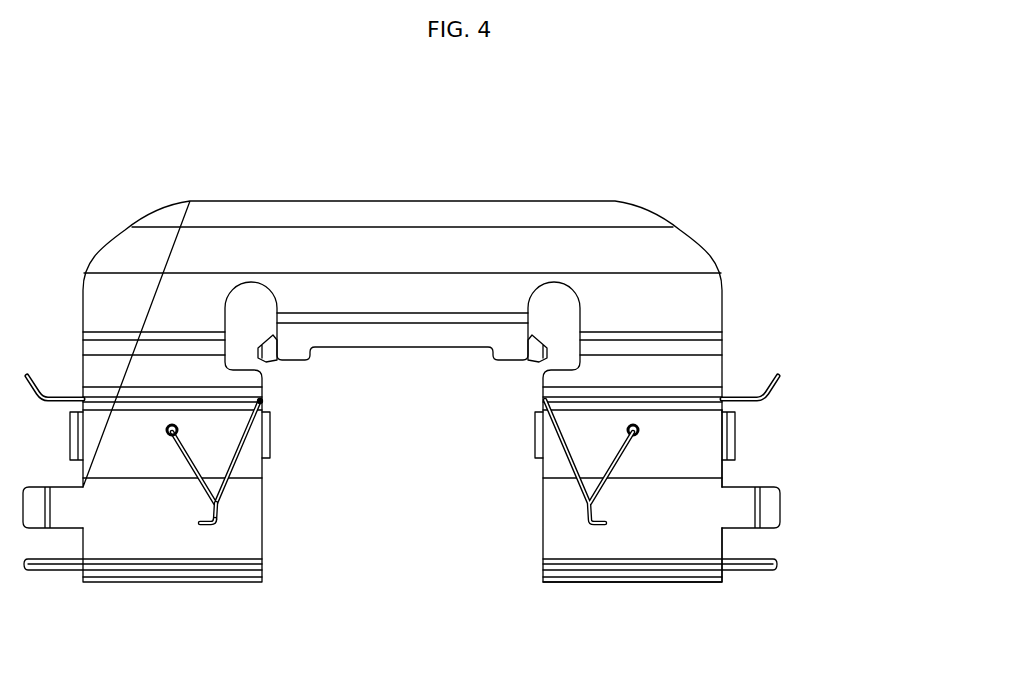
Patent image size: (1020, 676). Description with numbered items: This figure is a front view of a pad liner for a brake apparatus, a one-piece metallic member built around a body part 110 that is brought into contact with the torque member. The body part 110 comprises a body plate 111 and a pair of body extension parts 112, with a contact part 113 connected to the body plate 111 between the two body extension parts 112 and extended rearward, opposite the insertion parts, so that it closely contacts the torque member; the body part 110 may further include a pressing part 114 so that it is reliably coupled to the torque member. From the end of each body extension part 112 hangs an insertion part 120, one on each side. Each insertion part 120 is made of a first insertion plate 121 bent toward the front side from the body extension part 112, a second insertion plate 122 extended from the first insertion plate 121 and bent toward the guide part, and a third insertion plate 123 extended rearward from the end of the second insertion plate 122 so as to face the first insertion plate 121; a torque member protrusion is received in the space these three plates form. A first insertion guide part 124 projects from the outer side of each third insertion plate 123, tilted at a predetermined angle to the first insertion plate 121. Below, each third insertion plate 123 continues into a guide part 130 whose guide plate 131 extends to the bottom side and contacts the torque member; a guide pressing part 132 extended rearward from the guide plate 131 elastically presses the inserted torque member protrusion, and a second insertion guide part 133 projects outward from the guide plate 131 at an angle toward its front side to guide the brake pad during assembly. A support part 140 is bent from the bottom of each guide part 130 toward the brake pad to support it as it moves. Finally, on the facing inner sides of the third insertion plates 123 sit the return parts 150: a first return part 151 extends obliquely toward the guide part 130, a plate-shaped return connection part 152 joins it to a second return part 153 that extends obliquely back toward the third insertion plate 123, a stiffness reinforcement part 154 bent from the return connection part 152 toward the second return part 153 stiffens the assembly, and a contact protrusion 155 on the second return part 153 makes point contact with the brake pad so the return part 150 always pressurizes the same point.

The body part 110 is at (645, 190).
The body plate 111 is at (570, 250).
The body extension part 112 is at (688, 308).
The contact part 113 is at (455, 322).
The pressing part 114 is at (270, 350).
The insertion part 120 is at (787, 270).
The first insertion plate 121 is at (705, 332).
The second insertion plate 122 is at (698, 367).
The third insertion plate 123 is at (733, 413).
The first insertion guide part 124 is at (767, 390).
The guide part 130 is at (845, 450).
The guide plate 131 is at (690, 510).
The guide pressing part 132 is at (732, 443).
The second insertion guide part 133 is at (768, 505).
The support part 140 is at (705, 575).
The return part 150 is at (568, 492).
The first return part 151 is at (266, 442).
The return connection part 152 is at (219, 512).
The second return part 153 is at (197, 467).
The stiffness reinforcement part 154 is at (207, 527).
The contact protrusion 155 is at (222, 410).